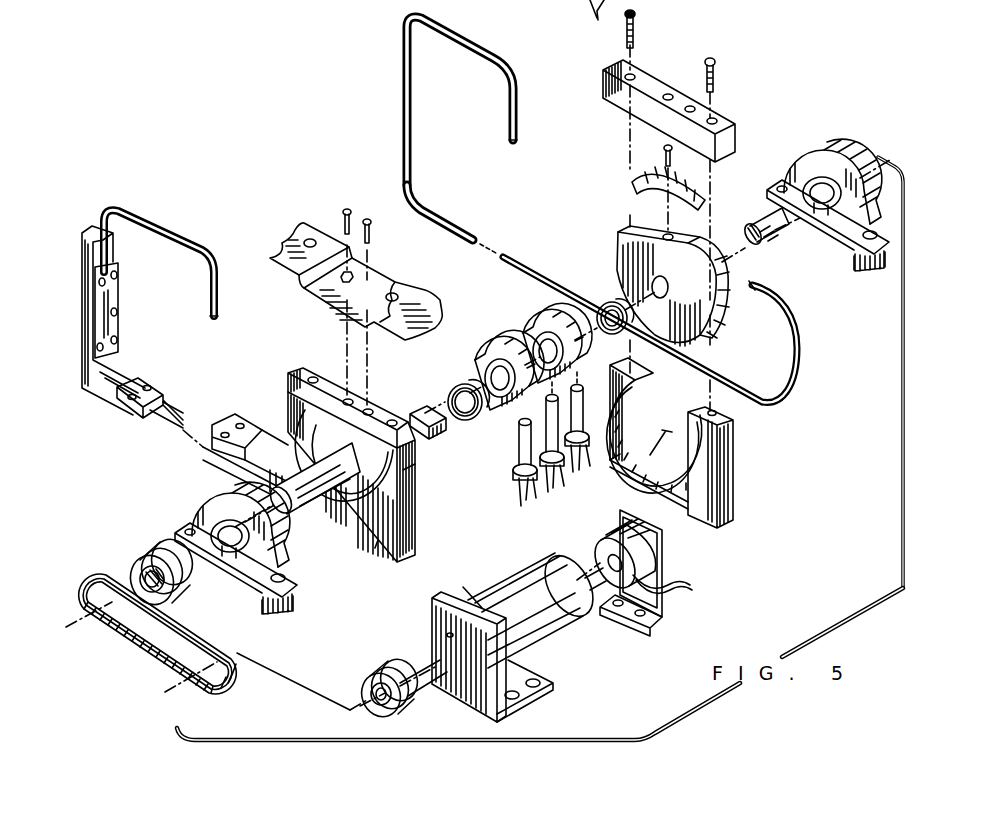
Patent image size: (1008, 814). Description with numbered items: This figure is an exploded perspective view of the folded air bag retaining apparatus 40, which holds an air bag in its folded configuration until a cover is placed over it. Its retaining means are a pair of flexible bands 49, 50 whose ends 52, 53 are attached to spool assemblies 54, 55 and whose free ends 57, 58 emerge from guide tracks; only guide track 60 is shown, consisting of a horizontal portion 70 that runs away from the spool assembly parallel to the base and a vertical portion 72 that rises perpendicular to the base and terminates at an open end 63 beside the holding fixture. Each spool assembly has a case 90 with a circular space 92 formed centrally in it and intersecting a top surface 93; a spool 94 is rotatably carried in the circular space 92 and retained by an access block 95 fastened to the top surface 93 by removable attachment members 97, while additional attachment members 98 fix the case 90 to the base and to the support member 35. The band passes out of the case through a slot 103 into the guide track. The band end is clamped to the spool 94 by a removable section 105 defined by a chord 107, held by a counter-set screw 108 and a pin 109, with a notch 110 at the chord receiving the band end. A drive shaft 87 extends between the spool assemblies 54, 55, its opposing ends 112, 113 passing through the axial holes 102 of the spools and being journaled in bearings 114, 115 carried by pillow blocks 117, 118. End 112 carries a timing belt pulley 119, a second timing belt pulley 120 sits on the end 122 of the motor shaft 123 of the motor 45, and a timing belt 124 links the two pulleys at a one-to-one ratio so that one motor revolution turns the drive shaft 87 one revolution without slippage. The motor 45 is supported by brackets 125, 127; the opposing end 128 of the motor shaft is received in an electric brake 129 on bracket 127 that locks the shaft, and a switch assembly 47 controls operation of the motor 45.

The support member 35 is at (298, 222).
The folded air bag retaining apparatus 40 is at (864, 478).
The motor 45 is at (575, 630).
The switch assembly 47 is at (510, 456).
The flexible band 49 is at (178, 218).
The flexible band 50 is at (404, 97).
The end of flexible band 52 is at (412, 482).
The end of flexible band 53 is at (765, 288).
The spool assembly 54 is at (420, 458).
The spool assembly 55 is at (742, 455).
The free end 57 is at (213, 318).
The free end 58 is at (513, 142).
The guide track 60 is at (108, 417).
The open end 63 is at (90, 225).
The horizontal portion 70 is at (232, 422).
The vertical portion 72 is at (118, 300).
The drive shaft 87 is at (418, 412).
The case 90 is at (415, 540).
The circular space 92 is at (630, 477).
The top surface 93 is at (728, 410).
The spool 94 is at (705, 338).
The access block 95 is at (737, 127).
The removable attachment members 97 is at (638, 22).
The additional attachment members 98 is at (365, 188).
The axial hole 102 is at (352, 512).
The slot 103 is at (652, 462).
The removable section 105 is at (640, 190).
The chord 107 is at (300, 428).
The screw 108 is at (660, 152).
The pin 109 is at (628, 222).
The notch 110 is at (690, 188).
The end of drive shaft 112 is at (290, 514).
The end of drive shaft 113 is at (752, 220).
The bearing 114 is at (203, 512).
The bearing 115 is at (800, 178).
The pillow block 117 is at (240, 584).
The pillow block 118 is at (845, 245).
The timing belt pulley 119 is at (137, 562).
The timing belt pulley 120 is at (365, 675).
The end of motor shaft 122 is at (427, 643).
The motor shaft 123 is at (487, 587).
The timing belt 124 is at (222, 653).
The bracket 125 is at (523, 717).
The bracket 127 is at (662, 553).
The end of motor shaft 128 is at (593, 563).
The electric brake 129 is at (665, 573).